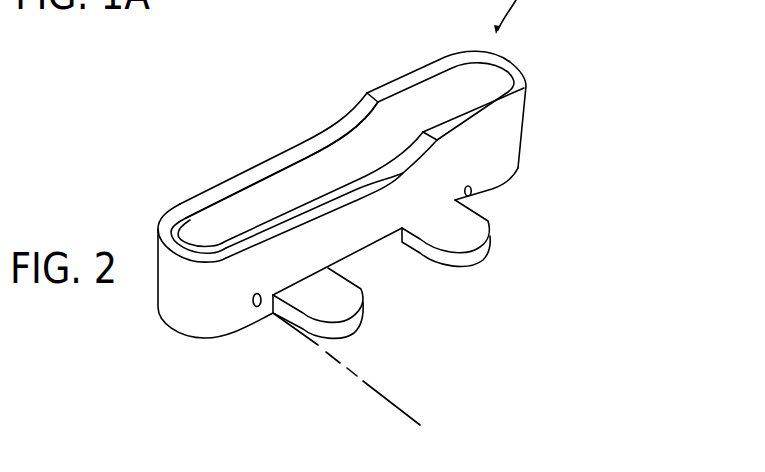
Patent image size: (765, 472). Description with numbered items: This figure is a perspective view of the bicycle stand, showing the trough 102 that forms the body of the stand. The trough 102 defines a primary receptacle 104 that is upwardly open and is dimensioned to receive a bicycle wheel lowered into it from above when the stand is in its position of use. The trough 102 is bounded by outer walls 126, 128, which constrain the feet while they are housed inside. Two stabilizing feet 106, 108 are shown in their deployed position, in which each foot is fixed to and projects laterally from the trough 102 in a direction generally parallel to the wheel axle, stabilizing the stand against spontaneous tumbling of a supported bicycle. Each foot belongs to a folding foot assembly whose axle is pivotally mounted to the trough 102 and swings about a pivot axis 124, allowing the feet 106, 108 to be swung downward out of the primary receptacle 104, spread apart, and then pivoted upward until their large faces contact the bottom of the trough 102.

The trough 102 is at (204, 350).
The primary receptacle 104 is at (423, 100).
The stabilizing foot 106 is at (350, 296).
The stabilizing foot 108 is at (468, 232).
The pivot axis 124 is at (402, 408).
The outer wall 126 is at (383, 233).
The outer wall 128 is at (368, 171).